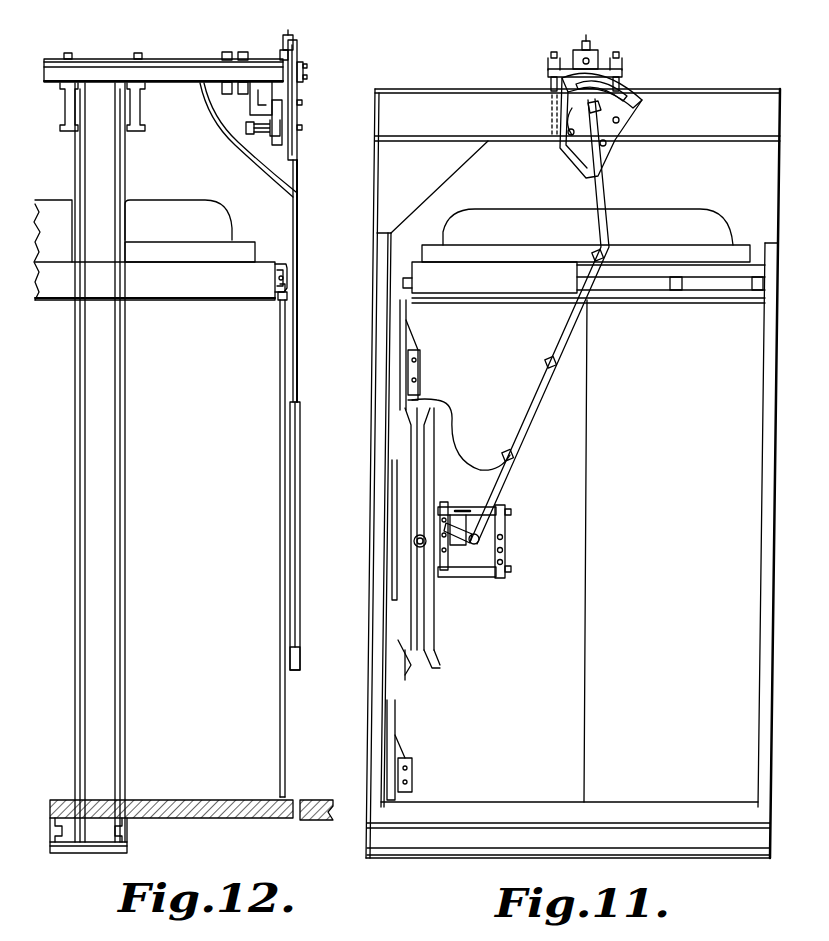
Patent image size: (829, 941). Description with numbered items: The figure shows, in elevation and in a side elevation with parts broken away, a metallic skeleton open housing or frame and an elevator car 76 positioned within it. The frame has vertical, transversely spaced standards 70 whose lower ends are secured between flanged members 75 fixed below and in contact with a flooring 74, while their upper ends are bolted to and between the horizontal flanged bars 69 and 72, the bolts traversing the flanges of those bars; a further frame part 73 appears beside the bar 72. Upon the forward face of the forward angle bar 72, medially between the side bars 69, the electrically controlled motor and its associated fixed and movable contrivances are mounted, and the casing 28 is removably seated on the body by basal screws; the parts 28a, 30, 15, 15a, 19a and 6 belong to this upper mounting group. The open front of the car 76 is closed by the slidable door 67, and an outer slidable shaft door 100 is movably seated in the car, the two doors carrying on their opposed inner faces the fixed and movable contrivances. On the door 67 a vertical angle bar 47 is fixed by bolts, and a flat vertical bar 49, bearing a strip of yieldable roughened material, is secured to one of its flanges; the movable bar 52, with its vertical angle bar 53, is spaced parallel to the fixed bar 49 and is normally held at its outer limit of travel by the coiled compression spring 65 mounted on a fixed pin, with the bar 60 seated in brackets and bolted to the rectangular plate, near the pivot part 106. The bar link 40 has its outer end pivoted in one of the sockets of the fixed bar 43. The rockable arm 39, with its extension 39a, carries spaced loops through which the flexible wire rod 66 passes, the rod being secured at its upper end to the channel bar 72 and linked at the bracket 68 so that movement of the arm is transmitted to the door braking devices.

In FIG. 12, the bracket body 6 is at (256, 109).
In FIG. 12, the plate 15 is at (310, 94).
In FIG. 11, the plate 15 is at (606, 129).
In FIG. 12, the plate extension 15a is at (325, 73).
In FIG. 12, the adjusting bolt 19a is at (246, 128).
In FIG. 12, the casing 28 is at (284, 42).
In FIG. 11, the bracket 28a is at (596, 55).
In FIG. 12, the block 30 is at (297, 47).
In FIG. 12, the arm 39 is at (301, 149).
In FIG. 11, the arm 39 is at (590, 220).
In FIG. 12, the arm extension 39a is at (318, 210).
In FIG. 11, the arm extension 39a is at (500, 539).
In FIG. 11, the bar link 40 is at (462, 555).
In FIG. 11, the fixed bar 43 is at (448, 576).
In FIG. 11, the vertical angle bar 47 is at (407, 673).
In FIG. 11, the flat vertical bar 49 is at (410, 656).
In FIG. 12, the movable bar 52 is at (298, 658).
In FIG. 11, the movable bar 52 is at (436, 671).
In FIG. 11, the vertical angle bar 53 is at (436, 641).
In FIG. 11, the bar 60 is at (490, 578).
In FIG. 11, the coiled compression spring 65 is at (436, 524).
In FIG. 11, the flexible wire rod 66 is at (462, 456).
In FIG. 12, the slidable door 67 is at (281, 345).
In FIG. 11, the bracket 68 is at (407, 313).
In FIG. 12, the horizontal flanged bar 69 is at (172, 53).
In FIG. 12, the standard 70 is at (75, 159).
In FIG. 11, the standard 70 is at (372, 282).
In FIG. 12, the horizontal flanged bar 72 is at (68, 100).
In FIG. 11, the horizontal flanged bar 72 is at (577, 115).
In FIG. 12, the wall 73 is at (73, 223).
In FIG. 11, the wall 73 is at (432, 187).
In FIG. 12, the flooring 74 is at (206, 820).
In FIG. 12, the flanged member 75 is at (125, 836).
In FIG. 12, the elevator car 76 is at (155, 212).
In FIG. 11, the elevator car 76 is at (482, 212).
In FIG. 11, the outer slidable door 100 is at (675, 551).
In FIG. 11, the pivot washer 106 is at (417, 546).